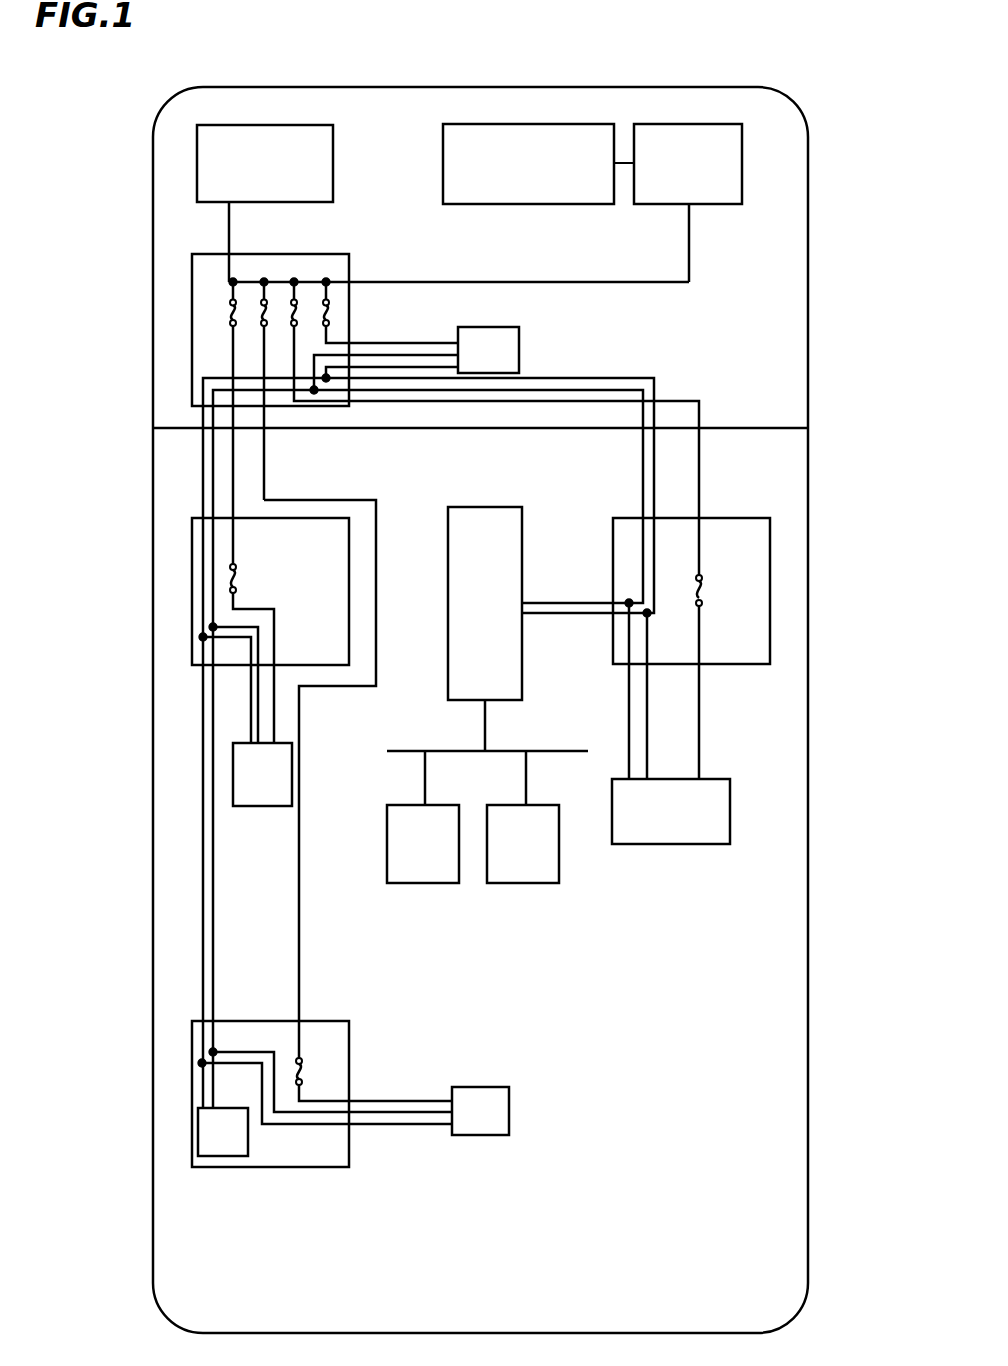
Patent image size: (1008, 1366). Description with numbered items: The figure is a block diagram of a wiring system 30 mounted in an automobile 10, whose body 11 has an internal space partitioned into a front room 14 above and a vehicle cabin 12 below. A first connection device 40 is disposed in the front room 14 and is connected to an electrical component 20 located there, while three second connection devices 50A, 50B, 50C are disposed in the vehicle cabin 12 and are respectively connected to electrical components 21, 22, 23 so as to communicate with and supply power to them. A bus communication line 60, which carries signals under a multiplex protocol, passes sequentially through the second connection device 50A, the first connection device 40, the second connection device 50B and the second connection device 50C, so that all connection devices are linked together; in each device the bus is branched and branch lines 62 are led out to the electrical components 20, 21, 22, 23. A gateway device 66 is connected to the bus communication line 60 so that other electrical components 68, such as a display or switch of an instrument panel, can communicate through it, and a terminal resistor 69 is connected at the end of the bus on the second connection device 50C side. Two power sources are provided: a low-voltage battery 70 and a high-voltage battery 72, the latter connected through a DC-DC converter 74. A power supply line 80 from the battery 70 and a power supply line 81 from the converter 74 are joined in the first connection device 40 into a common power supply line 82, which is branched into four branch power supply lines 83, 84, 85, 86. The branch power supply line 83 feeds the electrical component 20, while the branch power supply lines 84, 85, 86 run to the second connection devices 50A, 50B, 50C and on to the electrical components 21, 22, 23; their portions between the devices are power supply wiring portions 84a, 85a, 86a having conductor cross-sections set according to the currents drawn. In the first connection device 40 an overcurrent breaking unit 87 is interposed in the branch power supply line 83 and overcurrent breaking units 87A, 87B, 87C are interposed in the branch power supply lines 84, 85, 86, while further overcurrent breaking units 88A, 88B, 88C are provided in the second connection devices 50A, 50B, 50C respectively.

The automobile 10 is at (521, 710).
The body 11 is at (810, 185).
The vehicle cabin 12 is at (808, 833).
The front room 14 is at (808, 360).
The electrical component 20 is at (520, 349).
The electrical component 21 is at (670, 845).
The electrical component 22 is at (262, 807).
The electrical component 23 is at (511, 1113).
The wiring system 30 is at (668, 340).
The first connection device 40 is at (338, 253).
The second connection device 50A is at (725, 518).
The second connection device 50B is at (351, 650).
The second connection device 50C is at (350, 1032).
The bus communication line 60 is at (653, 465).
The branch line 62 is at (428, 360).
The gateway device 66 is at (487, 507).
The other electrical components 68 is at (526, 883).
The terminal resistor 69 is at (223, 1157).
The battery 70 is at (278, 124).
The battery 72 is at (535, 124).
The DC-DC converter 74 is at (711, 124).
The power supply line 80 is at (227, 228).
The power supply line 81 is at (693, 243).
The common power supply line 82 is at (276, 281).
The branch power supply line 83 is at (340, 343).
The branch power supply line 84 is at (398, 404).
The power supply wiring portion 84a is at (673, 400).
The branch power supply line 85 is at (237, 472).
The power supply wiring portion 85a is at (237, 439).
The branch power supply line 86 is at (378, 532).
The power supply wiring portion 86a is at (378, 600).
The overcurrent breaking unit 87 is at (331, 312).
The overcurrent breaking unit 87A is at (302, 312).
The overcurrent breaking unit 87B is at (260, 318).
The overcurrent breaking unit 87C is at (228, 313).
The overcurrent breaking unit 88A is at (703, 592).
The overcurrent breaking unit 88B is at (240, 580).
The overcurrent breaking unit 88C is at (305, 1070).